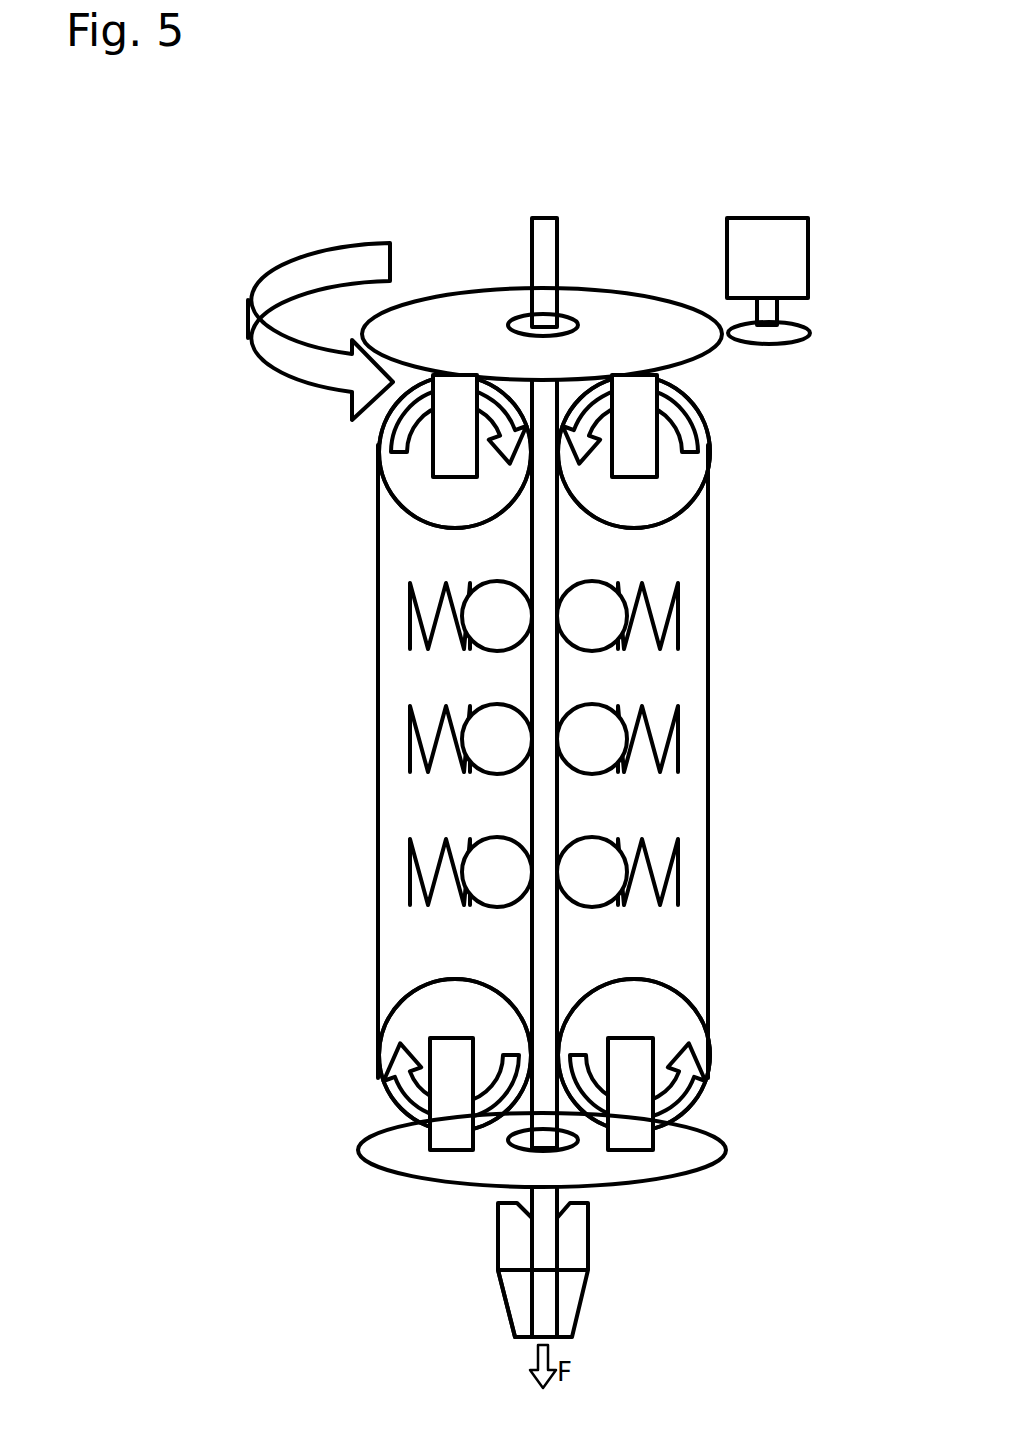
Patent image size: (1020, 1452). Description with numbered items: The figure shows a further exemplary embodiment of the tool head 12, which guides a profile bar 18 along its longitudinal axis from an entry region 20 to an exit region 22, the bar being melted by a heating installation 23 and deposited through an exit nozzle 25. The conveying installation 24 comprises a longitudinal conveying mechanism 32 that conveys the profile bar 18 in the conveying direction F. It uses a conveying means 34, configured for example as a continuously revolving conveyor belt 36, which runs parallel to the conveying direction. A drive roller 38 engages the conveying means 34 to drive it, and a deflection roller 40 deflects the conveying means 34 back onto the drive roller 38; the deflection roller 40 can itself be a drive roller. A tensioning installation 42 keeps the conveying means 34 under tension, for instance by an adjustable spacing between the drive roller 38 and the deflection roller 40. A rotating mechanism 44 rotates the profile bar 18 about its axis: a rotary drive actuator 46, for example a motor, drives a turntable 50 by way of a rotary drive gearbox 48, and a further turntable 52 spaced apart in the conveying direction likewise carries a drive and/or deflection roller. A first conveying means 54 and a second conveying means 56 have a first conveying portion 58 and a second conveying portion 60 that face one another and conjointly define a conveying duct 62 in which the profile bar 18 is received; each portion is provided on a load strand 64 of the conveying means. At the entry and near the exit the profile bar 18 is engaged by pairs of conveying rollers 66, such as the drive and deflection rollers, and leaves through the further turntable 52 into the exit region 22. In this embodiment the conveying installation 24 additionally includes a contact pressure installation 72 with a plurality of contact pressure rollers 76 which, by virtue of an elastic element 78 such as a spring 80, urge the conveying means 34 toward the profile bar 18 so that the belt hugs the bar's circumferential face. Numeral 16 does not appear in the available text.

The tool head 12 is at (228, 238).
The shaft 16 is at (532, 240).
The profile bar 18 is at (558, 262).
The entry region 20 is at (510, 326).
The exit region 22 is at (546, 1288).
The heating installation 23 is at (510, 1238).
The conveying installation 24 is at (268, 405).
The exit nozzle 25 is at (520, 1315).
The longitudinal conveying mechanism 32 is at (295, 488).
The conveying means 34 is at (532, 549).
The conveyor belt 36 is at (378, 548).
The drive roller 38 is at (378, 1040).
The deflection roller 40 is at (385, 460).
The tensioning installation 42 is at (440, 455).
The rotating mechanism 44 is at (717, 251).
The rotary drive actuator 46 is at (727, 244).
The rotary drive gearbox 48 is at (710, 298).
The turntable 50 is at (420, 292).
The further turntable 52 is at (725, 1140).
The first conveying means 54 is at (378, 665).
The second conveying means 56 is at (708, 670).
The first conveying portion 58 is at (532, 673).
The second conveying portion 60 is at (557, 678).
The conveying duct 62 is at (557, 808).
The load strand 64 is at (532, 942).
The conveying rollers 66 is at (452, 520).
The contact pressure installation 72 is at (342, 802).
The contact pressure rollers 76 is at (505, 758).
The elastic element 78 is at (458, 744).
The spring 80 is at (410, 738).